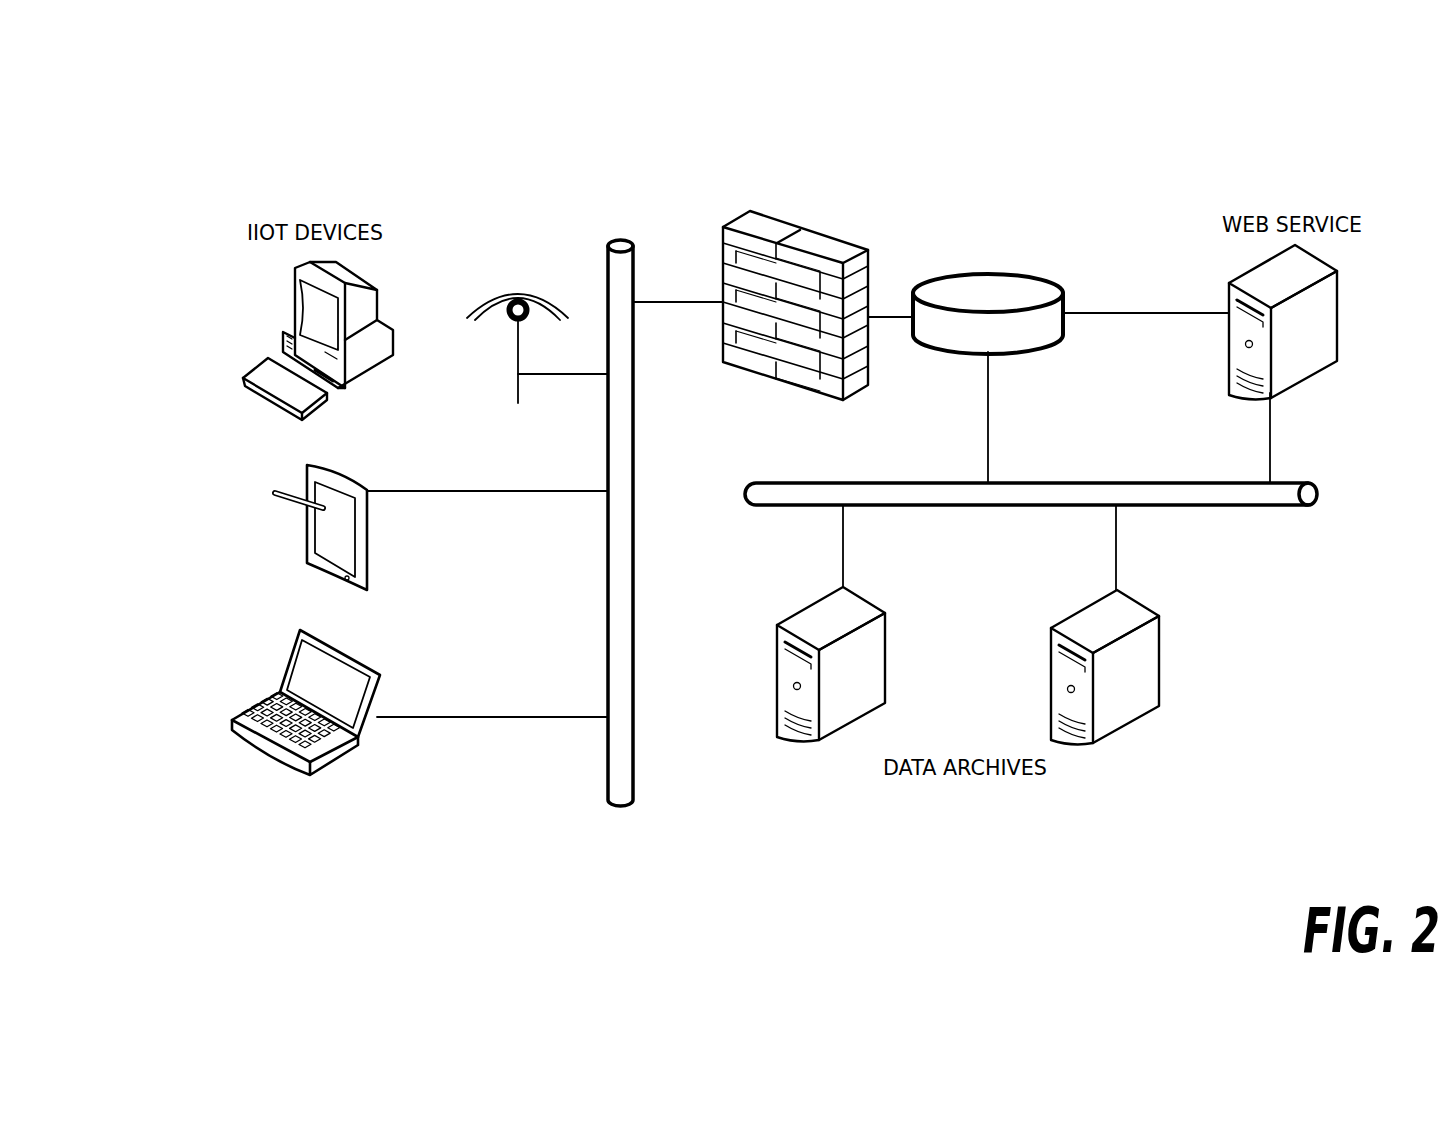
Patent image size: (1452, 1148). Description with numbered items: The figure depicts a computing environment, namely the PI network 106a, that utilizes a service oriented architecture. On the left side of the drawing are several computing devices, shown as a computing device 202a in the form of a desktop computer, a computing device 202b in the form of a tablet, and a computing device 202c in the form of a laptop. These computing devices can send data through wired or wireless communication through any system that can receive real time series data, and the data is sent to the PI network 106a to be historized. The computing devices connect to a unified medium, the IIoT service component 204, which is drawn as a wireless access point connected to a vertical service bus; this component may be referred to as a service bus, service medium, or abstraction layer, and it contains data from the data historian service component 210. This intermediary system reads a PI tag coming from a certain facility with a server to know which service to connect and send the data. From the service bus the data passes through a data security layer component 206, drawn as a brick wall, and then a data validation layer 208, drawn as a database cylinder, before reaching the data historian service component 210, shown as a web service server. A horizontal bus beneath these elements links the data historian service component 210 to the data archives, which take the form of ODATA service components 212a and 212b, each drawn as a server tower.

The PI network 106a is at (1308, 88).
The computing device 202a is at (212, 300).
The computing device 202b is at (208, 480).
The computing device 202c is at (208, 648).
The IIoT service component 204 is at (480, 408).
The data security layer component 206 is at (838, 198).
The data validation layer 208 is at (1018, 240).
The data historian service component 210 is at (1216, 400).
The ODATA service component 212a is at (782, 750).
The ODATA service component 212b is at (1163, 743).